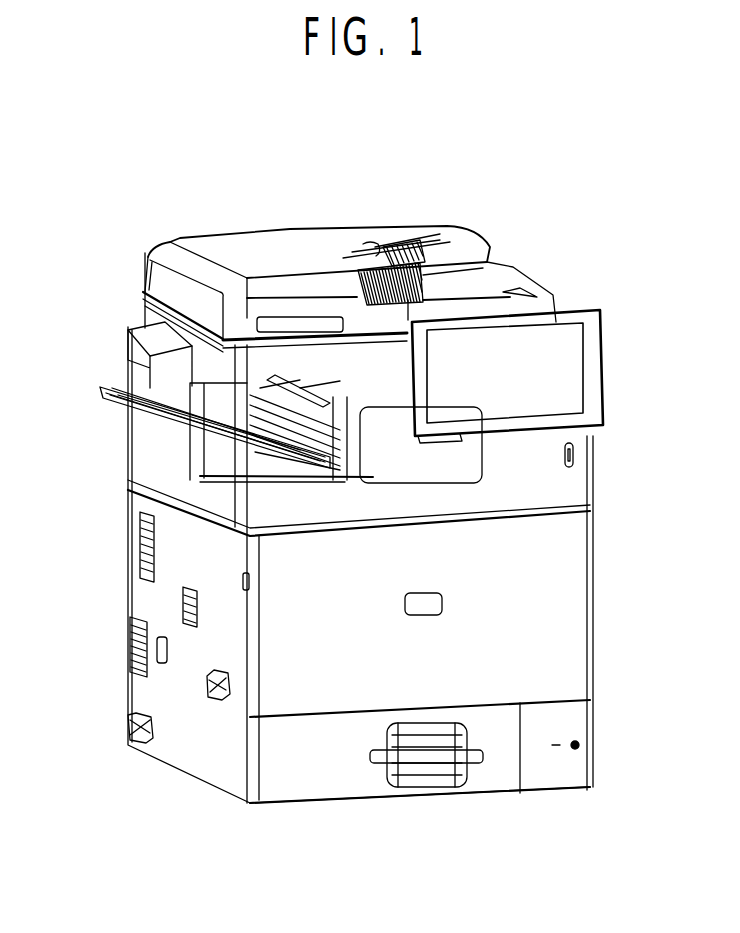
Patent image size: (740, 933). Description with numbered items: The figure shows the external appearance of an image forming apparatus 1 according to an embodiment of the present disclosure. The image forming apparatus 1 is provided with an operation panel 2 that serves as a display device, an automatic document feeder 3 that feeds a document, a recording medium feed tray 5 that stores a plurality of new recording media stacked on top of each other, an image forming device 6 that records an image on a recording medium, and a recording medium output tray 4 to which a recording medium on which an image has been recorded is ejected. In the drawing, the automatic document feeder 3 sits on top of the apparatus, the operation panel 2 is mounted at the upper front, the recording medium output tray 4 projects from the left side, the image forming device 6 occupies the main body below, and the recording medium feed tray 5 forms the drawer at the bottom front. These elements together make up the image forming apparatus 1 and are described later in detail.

The image forming apparatus 1 is at (396, 212).
The operation panel 2 is at (533, 363).
The automatic document feeder 3 is at (233, 253).
The recording medium output tray 4 is at (193, 410).
The recording medium feed tray 5 is at (503, 747).
The image forming device 6 is at (527, 551).